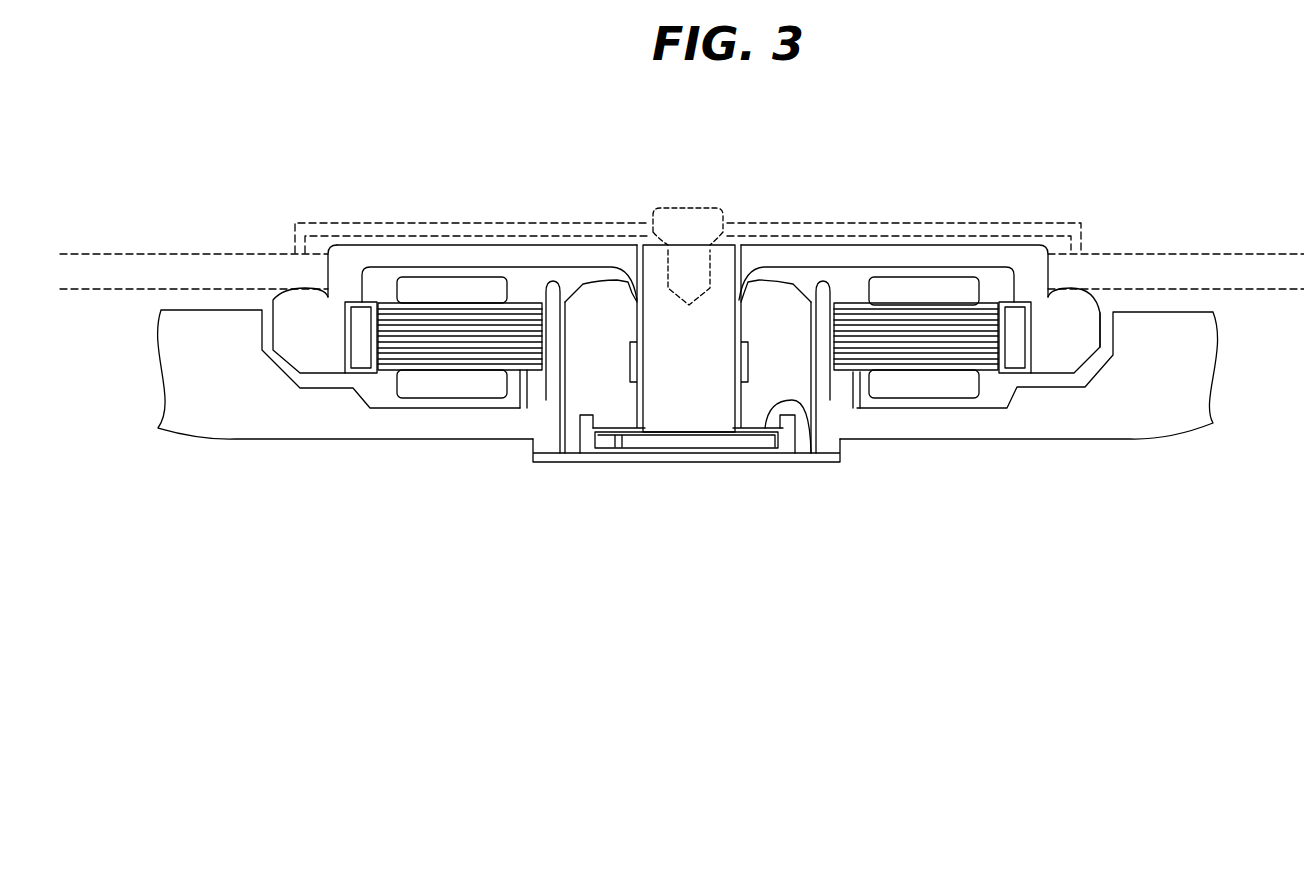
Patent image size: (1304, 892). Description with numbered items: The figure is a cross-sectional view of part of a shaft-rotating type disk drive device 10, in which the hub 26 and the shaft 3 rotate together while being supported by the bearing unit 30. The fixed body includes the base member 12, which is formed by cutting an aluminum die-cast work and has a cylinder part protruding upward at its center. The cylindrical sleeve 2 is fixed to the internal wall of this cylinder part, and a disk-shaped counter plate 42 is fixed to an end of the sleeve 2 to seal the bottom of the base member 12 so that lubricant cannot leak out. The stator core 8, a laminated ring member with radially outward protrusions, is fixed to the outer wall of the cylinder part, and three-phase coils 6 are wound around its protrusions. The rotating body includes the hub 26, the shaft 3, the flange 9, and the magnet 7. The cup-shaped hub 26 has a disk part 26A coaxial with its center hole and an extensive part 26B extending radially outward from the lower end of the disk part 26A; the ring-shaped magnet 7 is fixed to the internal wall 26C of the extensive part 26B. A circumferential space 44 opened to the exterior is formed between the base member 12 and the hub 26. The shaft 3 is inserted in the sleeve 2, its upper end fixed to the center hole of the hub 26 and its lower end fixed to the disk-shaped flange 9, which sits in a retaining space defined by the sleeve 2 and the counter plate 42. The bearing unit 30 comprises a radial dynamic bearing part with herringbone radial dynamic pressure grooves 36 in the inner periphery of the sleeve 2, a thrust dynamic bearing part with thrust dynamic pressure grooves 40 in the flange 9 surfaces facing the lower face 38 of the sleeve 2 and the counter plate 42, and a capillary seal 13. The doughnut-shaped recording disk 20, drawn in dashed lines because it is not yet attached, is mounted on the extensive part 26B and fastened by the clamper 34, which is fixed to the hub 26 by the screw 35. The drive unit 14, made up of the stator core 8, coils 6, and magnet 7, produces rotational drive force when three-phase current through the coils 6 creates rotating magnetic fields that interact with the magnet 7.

The sleeve 2 is at (618, 407).
The shaft 3 is at (692, 392).
The coils 6 is at (962, 388).
The magnet 7 is at (1015, 358).
The stator core 8 is at (902, 345).
The flange 9 is at (785, 437).
The disk drive device 10 is at (701, 652).
The base member 12 is at (1098, 428).
The capillary seal 13 is at (637, 282).
The drive unit 14 is at (387, 383).
The recording disk 20 is at (1175, 272).
The hub 26 is at (982, 257).
The disk part 26A is at (403, 250).
The extensive part 26B is at (294, 291).
The internal wall 26C is at (1037, 342).
The bearing unit 30 is at (603, 470).
The clamper 34 is at (828, 222).
The screw 35 is at (689, 207).
The radial dynamic pressure groove 36 is at (637, 395).
The lower face of the sleeve 38 is at (807, 438).
The thrust dynamic pressure groove 40 is at (755, 447).
The counter plate 42 is at (623, 462).
The circumferential space 44 is at (1108, 318).